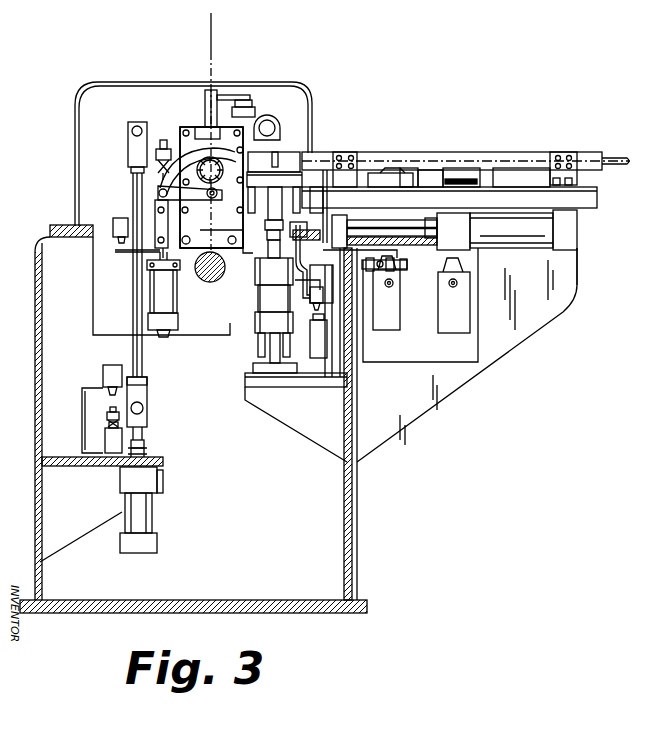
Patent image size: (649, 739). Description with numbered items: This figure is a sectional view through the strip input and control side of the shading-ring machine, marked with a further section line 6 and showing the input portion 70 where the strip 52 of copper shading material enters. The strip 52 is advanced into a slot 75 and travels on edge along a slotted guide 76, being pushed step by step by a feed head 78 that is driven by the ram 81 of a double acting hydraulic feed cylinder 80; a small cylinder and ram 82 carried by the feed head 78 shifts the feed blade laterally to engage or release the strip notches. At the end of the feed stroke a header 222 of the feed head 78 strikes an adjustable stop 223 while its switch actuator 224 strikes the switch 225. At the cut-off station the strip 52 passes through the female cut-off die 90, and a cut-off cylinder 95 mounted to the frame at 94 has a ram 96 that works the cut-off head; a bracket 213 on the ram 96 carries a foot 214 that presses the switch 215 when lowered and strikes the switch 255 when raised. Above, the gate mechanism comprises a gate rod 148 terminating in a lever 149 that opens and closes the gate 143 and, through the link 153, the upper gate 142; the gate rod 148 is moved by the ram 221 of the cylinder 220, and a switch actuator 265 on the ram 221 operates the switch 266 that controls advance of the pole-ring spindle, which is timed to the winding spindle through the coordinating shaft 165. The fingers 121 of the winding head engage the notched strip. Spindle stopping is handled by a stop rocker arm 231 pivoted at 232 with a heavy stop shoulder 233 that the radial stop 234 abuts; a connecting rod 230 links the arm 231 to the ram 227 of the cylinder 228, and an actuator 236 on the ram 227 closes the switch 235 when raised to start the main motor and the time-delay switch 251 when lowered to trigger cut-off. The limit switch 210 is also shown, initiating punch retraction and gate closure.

The section line 6— 6 is at (203, 29).
The stop 234 is at (215, 86).
The limit switch 210 is at (250, 103).
The pivot 232 is at (270, 122).
The stop rocker arm 231 is at (152, 123).
The stop shoulder 233 is at (199, 118).
The adjustable stop 223 is at (318, 217).
The header 222 is at (337, 220).
The feed head 78 is at (360, 178).
The slot 75 is at (428, 150).
The small cylinder and ram 82 is at (457, 174).
The input portion 70 is at (503, 148).
The slotted guide 76 is at (534, 152).
The strip 52 is at (620, 165).
The link 153 is at (135, 176).
The upper gate 142 is at (225, 152).
The female cut-off die 90 is at (273, 158).
The fingers 121 is at (158, 191).
The switch 266 is at (120, 217).
The lever 149 is at (208, 196).
The gate rod 148 is at (205, 200).
The gate 143 is at (228, 190).
The switch actuator 224 is at (405, 260).
The ram 81 is at (418, 232).
The hydraulic feed cylinder 80 is at (522, 238).
The switch actuator 265 is at (122, 258).
The ram 221 is at (147, 255).
The cylinder 220 is at (162, 300).
The ram 96 is at (268, 252).
The cut-off cylinder 95 is at (258, 295).
The coordinating shaft 165 is at (210, 283).
The switch 255 is at (315, 285).
The foot 214 is at (305, 302).
The frame mounting 94 is at (258, 352).
The bracket 213 is at (297, 266).
The switch 215 is at (317, 358).
The switch 225 is at (390, 323).
The connecting rod 230 is at (138, 350).
The switch 235 is at (105, 373).
The actuator 236 is at (108, 414).
The switch 251 is at (105, 440).
The ram 227 is at (148, 452).
The cylinder 228 is at (148, 513).